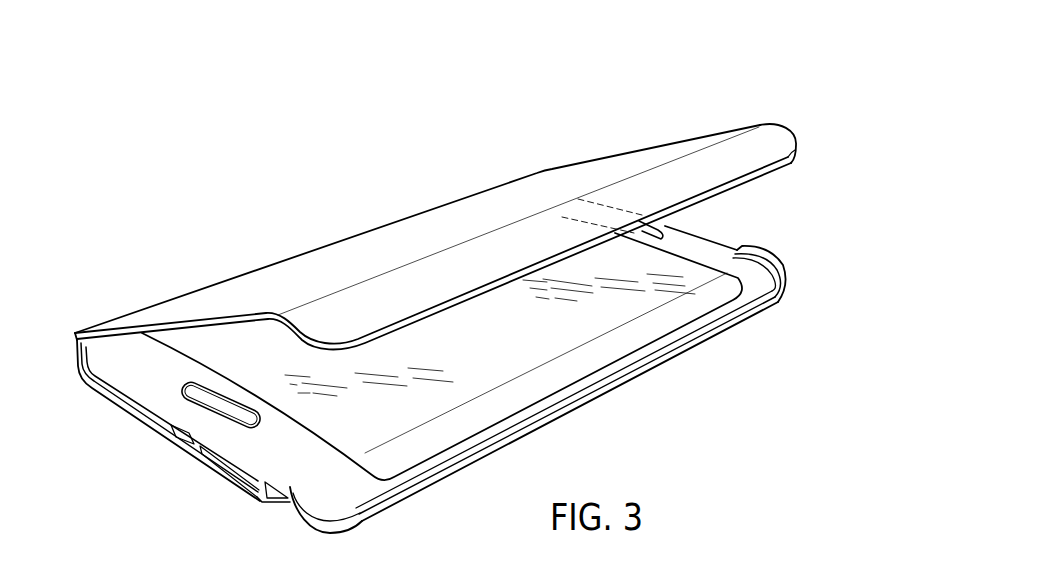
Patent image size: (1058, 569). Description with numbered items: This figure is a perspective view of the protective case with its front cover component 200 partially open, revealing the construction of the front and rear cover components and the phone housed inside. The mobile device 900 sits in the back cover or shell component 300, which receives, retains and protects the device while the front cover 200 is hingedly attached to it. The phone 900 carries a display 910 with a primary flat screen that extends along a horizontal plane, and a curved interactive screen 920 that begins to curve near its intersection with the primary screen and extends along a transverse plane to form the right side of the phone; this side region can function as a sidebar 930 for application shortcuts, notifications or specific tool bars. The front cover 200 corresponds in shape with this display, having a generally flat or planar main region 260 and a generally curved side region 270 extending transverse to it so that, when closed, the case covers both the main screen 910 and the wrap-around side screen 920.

The front cover component 200 is at (184, 320).
The main region 260 is at (602, 173).
The curved side region 270 is at (744, 153).
The back cover or shell component 300 is at (784, 272).
The mobile device 900 is at (159, 386).
The display 910 is at (372, 424).
The curved interactive screen 920 is at (474, 425).
The sidebar 930 is at (520, 403).